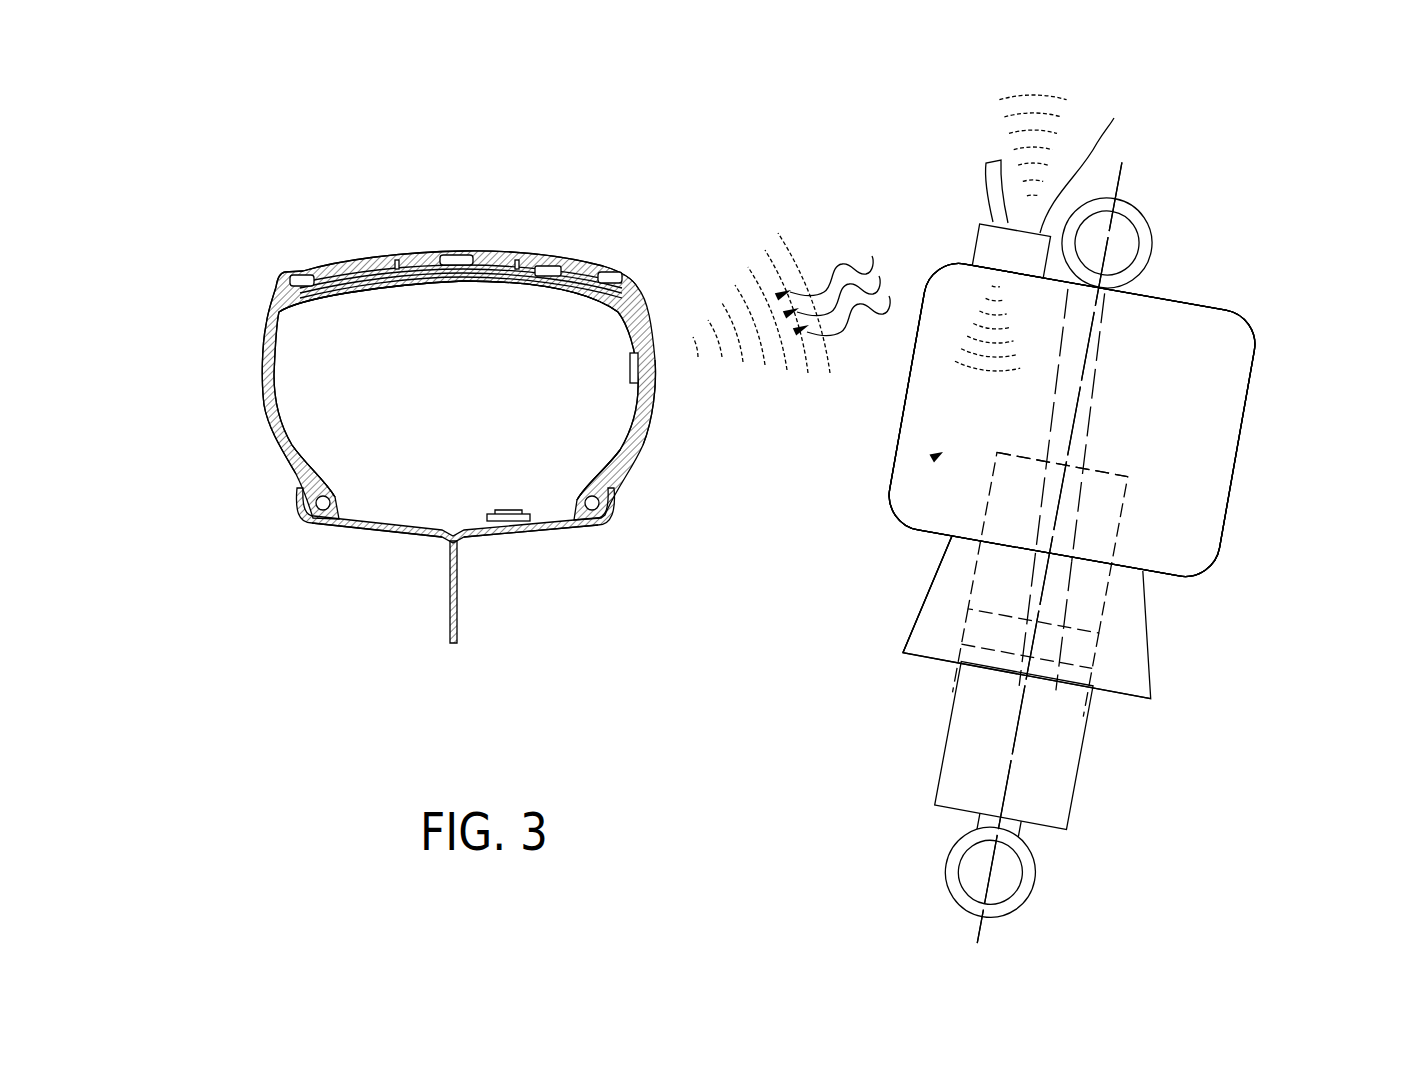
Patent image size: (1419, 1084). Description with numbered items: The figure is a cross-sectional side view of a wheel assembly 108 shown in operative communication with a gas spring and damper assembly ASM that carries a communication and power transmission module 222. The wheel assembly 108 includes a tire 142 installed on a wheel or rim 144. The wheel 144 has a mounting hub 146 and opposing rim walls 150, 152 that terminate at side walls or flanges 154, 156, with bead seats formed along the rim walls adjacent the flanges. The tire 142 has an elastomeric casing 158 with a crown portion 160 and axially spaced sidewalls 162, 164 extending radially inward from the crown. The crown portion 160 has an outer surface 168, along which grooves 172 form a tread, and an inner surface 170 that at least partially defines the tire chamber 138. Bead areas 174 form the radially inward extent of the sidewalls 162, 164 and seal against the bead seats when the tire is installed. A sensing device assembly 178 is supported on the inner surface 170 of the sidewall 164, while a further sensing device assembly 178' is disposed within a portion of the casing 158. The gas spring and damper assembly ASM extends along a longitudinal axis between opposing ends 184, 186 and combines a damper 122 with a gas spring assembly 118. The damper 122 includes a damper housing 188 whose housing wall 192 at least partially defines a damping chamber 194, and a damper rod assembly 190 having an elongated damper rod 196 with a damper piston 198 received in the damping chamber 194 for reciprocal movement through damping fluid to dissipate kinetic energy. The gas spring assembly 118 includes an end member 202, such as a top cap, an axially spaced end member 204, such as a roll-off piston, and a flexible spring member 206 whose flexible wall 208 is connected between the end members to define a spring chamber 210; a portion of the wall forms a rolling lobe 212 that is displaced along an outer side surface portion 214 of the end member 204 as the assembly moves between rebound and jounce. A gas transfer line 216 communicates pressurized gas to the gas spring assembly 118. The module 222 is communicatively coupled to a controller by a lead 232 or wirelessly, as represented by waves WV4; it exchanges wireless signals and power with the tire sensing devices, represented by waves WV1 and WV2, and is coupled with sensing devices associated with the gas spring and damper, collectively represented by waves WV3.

The wheel assembly 108 is at (266, 219).
The gas spring assembly 118 is at (1290, 337).
The damper assembly 122 is at (880, 778).
The tire chamber 138 is at (351, 370).
The tire 142 is at (249, 303).
The wheel or rim 144 is at (413, 638).
The mounting hub 146 is at (458, 597).
The rim wall 150 is at (365, 531).
The rim wall 152 is at (540, 532).
The flange 154 is at (300, 498).
The flange 156 is at (615, 500).
The elastomeric casing 158 is at (254, 366).
The crown portion 160 is at (360, 258).
The sidewall 162 is at (262, 413).
The sidewall 164 is at (649, 418).
The outer surface 168 is at (498, 257).
The inner surface 170 is at (472, 286).
The groove 172 is at (456, 249).
The bead area 174 is at (338, 474).
The sensing device assembly 178 is at (575, 345).
The sensing device assembly 178' is at (573, 222).
The end 184 is at (1309, 202).
The end 186 is at (1100, 861).
The damper housing 188 is at (1100, 735).
The damper rod assembly 190 is at (1108, 392).
The housing wall 192 is at (1062, 786).
The damping chamber 194 is at (1085, 600).
The damper rod 196 is at (1088, 417).
The damper piston 198 is at (1157, 673).
The end member 202 is at (1199, 298).
The end member 204 is at (930, 591).
The flexible spring member 206 is at (1264, 414).
The flexible wall 208 is at (900, 443).
The spring chamber 210 is at (918, 472).
The rolling lobe 212 is at (923, 535).
The outer side surface portion 214 is at (920, 623).
The gas transfer line 216 is at (990, 178).
The communication and power transmission module 222 is at (966, 231).
The lead 232 is at (1113, 136).
The gas spring and damper assembly ASM is at (1299, 132).
The waves WV1 is at (835, 246).
The waves WV2 is at (754, 254).
The waves WV3 is at (957, 356).
The waves WV4 is at (1063, 91).